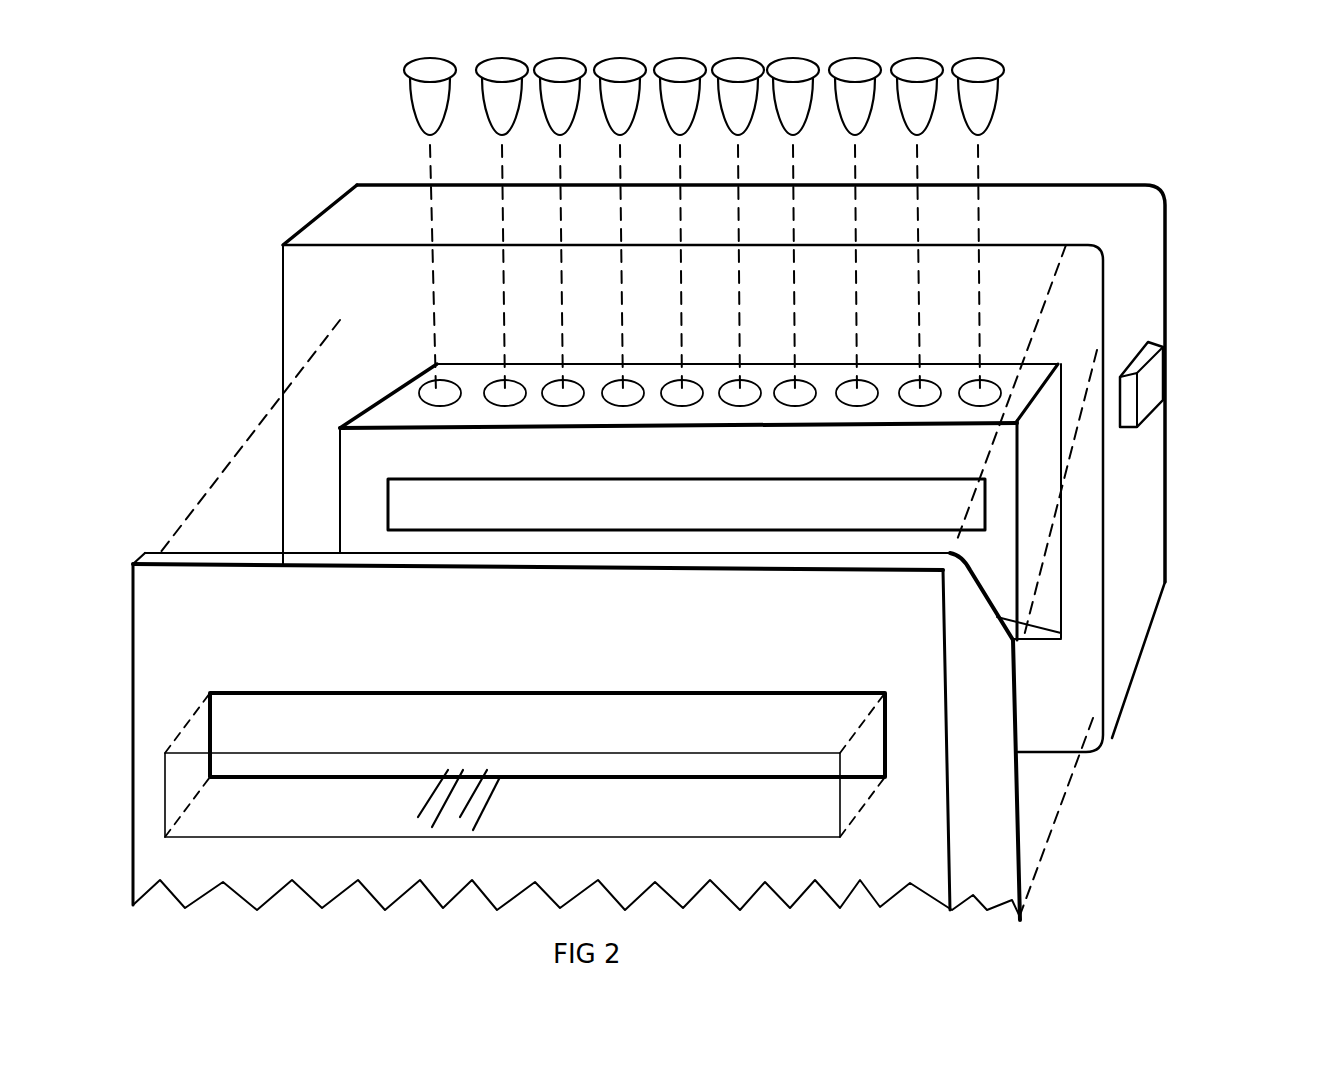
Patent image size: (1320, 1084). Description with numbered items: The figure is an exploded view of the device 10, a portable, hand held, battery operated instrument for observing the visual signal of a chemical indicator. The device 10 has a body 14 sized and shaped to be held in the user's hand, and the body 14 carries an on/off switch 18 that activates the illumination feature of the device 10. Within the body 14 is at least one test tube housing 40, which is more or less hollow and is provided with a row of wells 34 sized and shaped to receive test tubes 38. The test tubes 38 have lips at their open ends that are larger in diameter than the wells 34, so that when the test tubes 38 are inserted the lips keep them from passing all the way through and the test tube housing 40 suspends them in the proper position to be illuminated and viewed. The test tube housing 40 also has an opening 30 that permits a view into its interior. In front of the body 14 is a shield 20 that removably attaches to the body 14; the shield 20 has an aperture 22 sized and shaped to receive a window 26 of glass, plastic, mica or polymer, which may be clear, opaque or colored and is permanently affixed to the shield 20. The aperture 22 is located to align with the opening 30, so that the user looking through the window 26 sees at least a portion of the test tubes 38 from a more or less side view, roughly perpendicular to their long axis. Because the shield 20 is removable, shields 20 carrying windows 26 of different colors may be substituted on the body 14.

The device 10 is at (236, 162).
The body 14 is at (1085, 205).
The on/off switch 18 is at (1175, 348).
The shield 20 is at (890, 823).
The aperture 22 is at (400, 727).
The window 26 is at (755, 808).
The opening 30 is at (948, 497).
The wells 34 is at (985, 390).
The test tubes 38 is at (985, 105).
The test tube housing 40 is at (1033, 440).